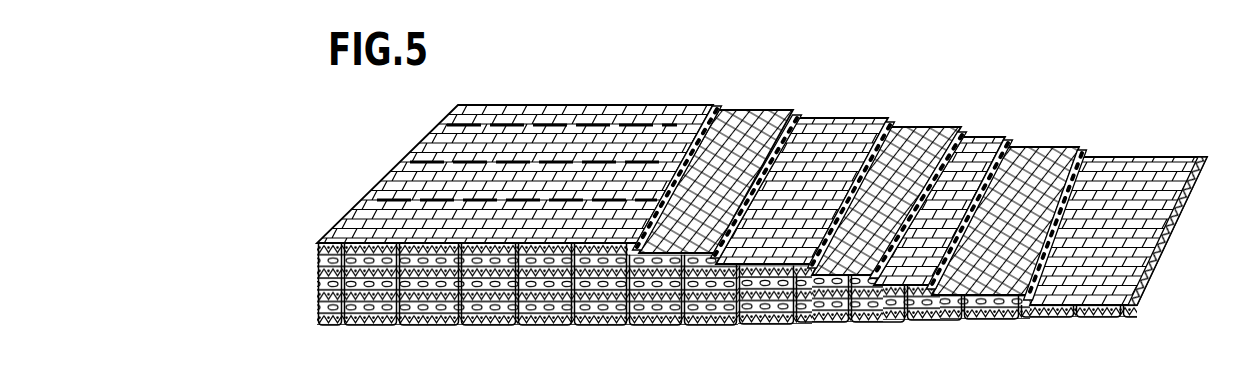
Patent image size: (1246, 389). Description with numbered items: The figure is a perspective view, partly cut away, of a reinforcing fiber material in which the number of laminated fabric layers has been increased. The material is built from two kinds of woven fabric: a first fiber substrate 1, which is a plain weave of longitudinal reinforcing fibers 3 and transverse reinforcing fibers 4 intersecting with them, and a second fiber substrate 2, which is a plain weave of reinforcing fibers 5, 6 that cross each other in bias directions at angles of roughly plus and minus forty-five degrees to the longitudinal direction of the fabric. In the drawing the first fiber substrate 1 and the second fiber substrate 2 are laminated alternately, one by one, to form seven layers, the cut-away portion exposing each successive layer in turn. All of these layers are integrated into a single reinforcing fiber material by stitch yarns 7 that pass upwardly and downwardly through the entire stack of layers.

The first fiber substrate 1 is at (762, 159).
The second fiber substrate 2 is at (876, 155).
The longitudinal reinforcing fibers 3 is at (762, 162).
The transverse reinforcing fibers 4 is at (1142, 160).
The reinforcing fibers 5 is at (1053, 145).
The reinforcing fibers 6 is at (1028, 143).
The stitch yarns 7 is at (808, 312).